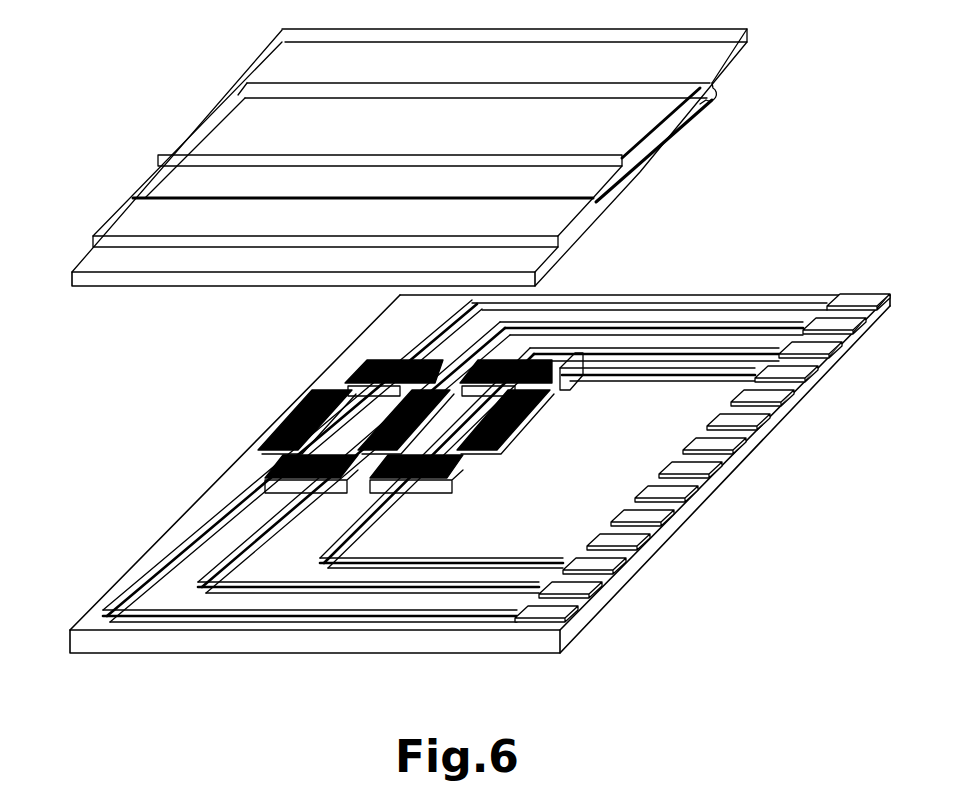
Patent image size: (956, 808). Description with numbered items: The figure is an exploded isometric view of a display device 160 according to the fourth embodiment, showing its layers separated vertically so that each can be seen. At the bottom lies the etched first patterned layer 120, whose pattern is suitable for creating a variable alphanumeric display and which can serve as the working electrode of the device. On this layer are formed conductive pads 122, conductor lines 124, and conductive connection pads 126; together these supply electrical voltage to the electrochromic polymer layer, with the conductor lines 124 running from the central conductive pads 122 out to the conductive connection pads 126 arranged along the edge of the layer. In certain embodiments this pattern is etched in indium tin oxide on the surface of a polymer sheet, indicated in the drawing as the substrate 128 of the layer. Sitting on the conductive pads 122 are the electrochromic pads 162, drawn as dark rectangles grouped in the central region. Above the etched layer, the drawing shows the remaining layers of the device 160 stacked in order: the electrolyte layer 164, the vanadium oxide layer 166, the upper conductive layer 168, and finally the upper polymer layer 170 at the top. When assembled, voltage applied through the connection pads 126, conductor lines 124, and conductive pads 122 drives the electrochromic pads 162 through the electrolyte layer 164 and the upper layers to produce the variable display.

The device 160 is at (383, 147).
The electrolyte layer 164 is at (80, 262).
The vanadium oxide layer 166 is at (118, 208).
The upper conductive layer 168 is at (148, 173).
The upper polymer layer 170 is at (193, 125).
The first patterned layer 120 is at (455, 498).
The conductive pads 122 is at (458, 474).
The conductor lines 124 is at (408, 628).
The conductive connection pads 126 is at (582, 622).
The substrate 128 is at (100, 655).
The electrochromic pads 162 is at (273, 422).